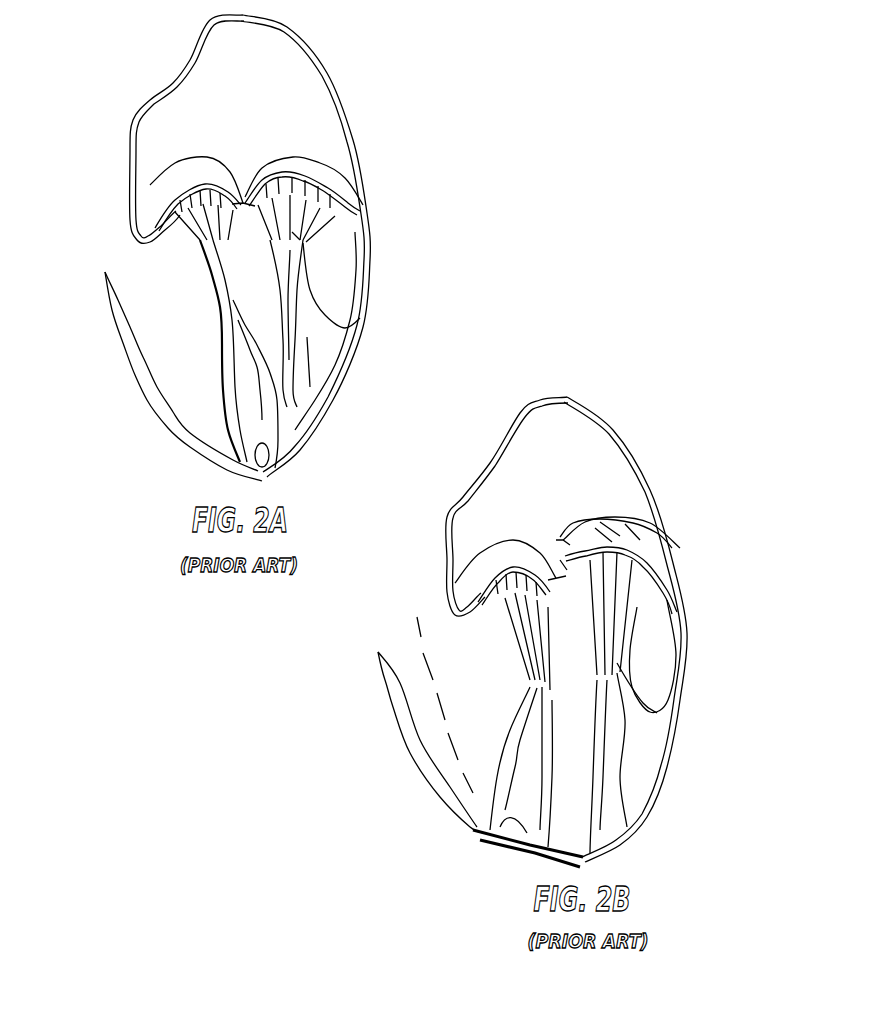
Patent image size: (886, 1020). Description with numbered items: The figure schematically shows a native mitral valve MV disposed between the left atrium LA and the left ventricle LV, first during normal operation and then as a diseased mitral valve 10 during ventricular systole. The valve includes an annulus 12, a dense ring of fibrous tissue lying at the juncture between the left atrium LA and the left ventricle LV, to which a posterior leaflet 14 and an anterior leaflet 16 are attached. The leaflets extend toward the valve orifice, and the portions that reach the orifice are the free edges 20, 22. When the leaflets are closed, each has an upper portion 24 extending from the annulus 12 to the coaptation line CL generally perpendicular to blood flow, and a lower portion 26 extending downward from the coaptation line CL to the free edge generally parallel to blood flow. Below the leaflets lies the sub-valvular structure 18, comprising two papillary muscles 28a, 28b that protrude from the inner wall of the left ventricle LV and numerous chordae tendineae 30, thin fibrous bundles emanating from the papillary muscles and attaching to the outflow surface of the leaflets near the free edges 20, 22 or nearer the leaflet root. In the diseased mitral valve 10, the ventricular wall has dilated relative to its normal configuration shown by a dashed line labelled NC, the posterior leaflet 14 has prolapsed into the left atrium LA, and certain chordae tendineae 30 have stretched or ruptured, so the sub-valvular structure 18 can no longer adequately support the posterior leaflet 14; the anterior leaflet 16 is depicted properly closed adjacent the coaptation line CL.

In FIG. 2B, the diseased mitral valve 10 is at (683, 557).
In FIG. 2A, the annulus 12 is at (373, 260).
In FIG. 2A, the posterior leaflet 14 is at (317, 158).
In FIG. 2B, the posterior leaflet 14 is at (633, 523).
In FIG. 2A, the anterior leaflet 16 is at (163, 192).
In FIG. 2B, the anterior leaflet 16 is at (480, 576).
In FIG. 2A, the sub-valvular structure 18 is at (207, 400).
In FIG. 2B, the sub-valvular structure 18 is at (570, 787).
In FIG. 2A, the free edge 20 is at (300, 240).
In FIG. 2B, the free edge 20 is at (563, 540).
In FIG. 2A, the free edge 22 is at (200, 235).
In FIG. 2B, the free edge 22 is at (513, 617).
In FIG. 2A, the upper portion 24 is at (286, 158).
In FIG. 2B, the upper portion 24 is at (625, 537).
In FIG. 2A, the lower portion 26 is at (240, 203).
In FIG. 2B, the lower portion 26 is at (556, 573).
In FIG. 2A, the papillary muscle 28a is at (243, 430).
In FIG. 2B, the papillary muscle 28a is at (507, 807).
In FIG. 2A, the papillary muscle 28b is at (318, 326).
In FIG. 2B, the papillary muscle 28b is at (633, 710).
In FIG. 2A, the chordae tendineae 30 is at (388, 213).
In FIG. 2B, the chordae tendineae 30 is at (702, 622).
In FIG. 2A, the left atrium LA is at (192, 105).
In FIG. 2B, the left atrium LA is at (507, 490).
In FIG. 2A, the left ventricle LV is at (148, 383).
In FIG. 2B, the left ventricle LV is at (470, 710).
In FIG. 2A, the mitral valve MV is at (369, 177).
In FIG. 2A, the coaptation line CL is at (243, 197).
In FIG. 2B, the coaptation line CL is at (568, 540).
In FIG. 2B, the normal configuration NC is at (453, 747).